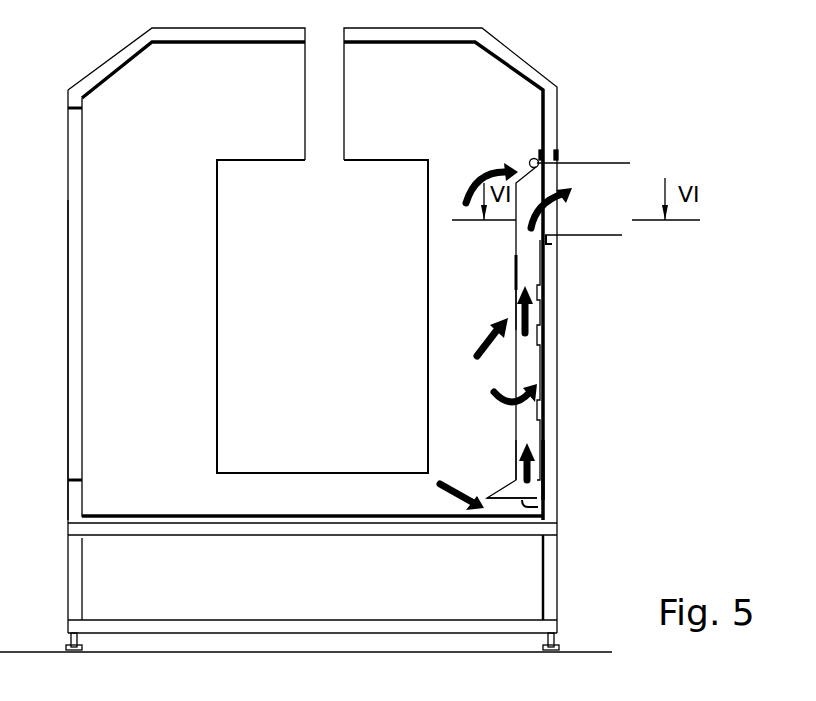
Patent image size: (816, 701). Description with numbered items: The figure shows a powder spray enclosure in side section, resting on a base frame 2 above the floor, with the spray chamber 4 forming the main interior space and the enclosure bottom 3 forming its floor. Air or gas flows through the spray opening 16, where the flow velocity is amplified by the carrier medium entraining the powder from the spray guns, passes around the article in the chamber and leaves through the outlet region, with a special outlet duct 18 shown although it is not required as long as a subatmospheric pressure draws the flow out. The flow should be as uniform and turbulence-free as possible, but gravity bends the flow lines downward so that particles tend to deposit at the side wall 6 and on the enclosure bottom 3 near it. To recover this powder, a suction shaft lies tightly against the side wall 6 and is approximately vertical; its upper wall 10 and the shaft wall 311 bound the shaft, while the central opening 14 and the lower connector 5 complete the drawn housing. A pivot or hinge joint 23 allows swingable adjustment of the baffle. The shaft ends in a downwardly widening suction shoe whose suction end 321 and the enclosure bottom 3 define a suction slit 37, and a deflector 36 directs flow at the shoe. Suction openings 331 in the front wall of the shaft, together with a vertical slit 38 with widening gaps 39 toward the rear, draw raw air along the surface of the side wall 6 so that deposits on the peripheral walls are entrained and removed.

The base frame 2 is at (560, 576).
The enclosure bottom 3 is at (347, 514).
The spray chamber 4 is at (164, 176).
The side wall connector 5 is at (72, 497).
The side wall 6 is at (548, 468).
The housing wall 10 is at (536, 64).
The opening 14 is at (386, 247).
The spray opening 16 is at (75, 372).
The outlet duct 18 is at (616, 192).
The pivot or hinge joint 23 is at (530, 160).
The deflector 36 is at (498, 478).
The suction slit 37 is at (505, 503).
The vertical slit 38 is at (543, 223).
The widening gaps 39 is at (545, 328).
The partition wall 311 is at (508, 273).
The suction end 321 is at (525, 507).
The suction openings 331 is at (518, 292).